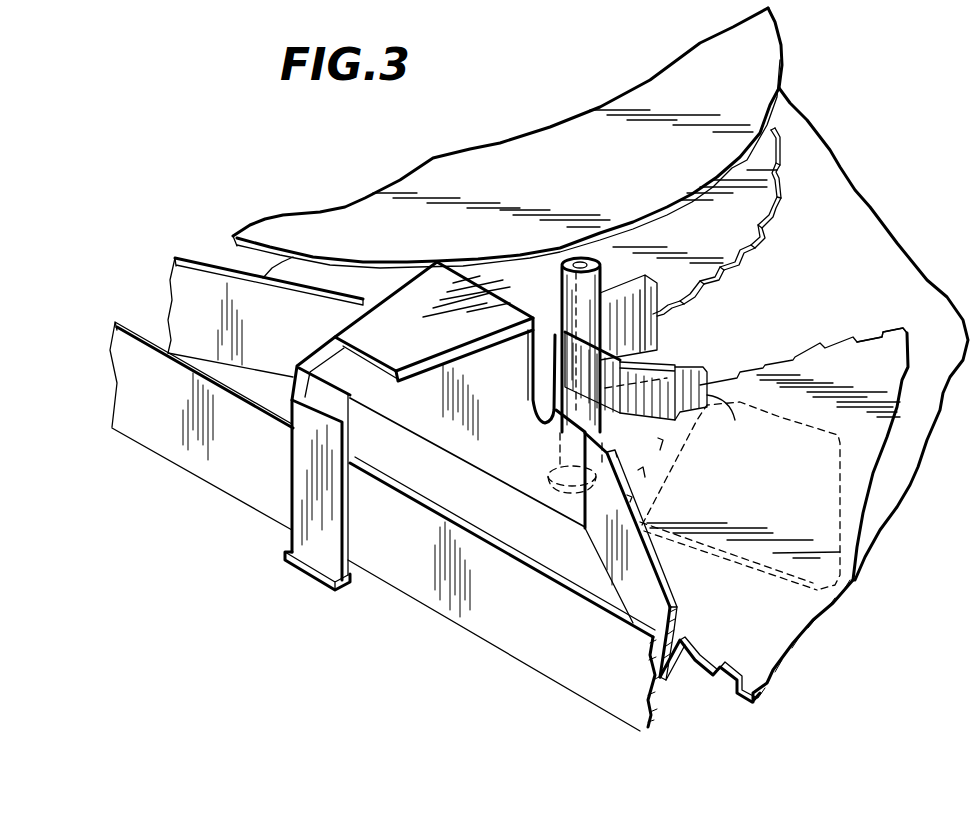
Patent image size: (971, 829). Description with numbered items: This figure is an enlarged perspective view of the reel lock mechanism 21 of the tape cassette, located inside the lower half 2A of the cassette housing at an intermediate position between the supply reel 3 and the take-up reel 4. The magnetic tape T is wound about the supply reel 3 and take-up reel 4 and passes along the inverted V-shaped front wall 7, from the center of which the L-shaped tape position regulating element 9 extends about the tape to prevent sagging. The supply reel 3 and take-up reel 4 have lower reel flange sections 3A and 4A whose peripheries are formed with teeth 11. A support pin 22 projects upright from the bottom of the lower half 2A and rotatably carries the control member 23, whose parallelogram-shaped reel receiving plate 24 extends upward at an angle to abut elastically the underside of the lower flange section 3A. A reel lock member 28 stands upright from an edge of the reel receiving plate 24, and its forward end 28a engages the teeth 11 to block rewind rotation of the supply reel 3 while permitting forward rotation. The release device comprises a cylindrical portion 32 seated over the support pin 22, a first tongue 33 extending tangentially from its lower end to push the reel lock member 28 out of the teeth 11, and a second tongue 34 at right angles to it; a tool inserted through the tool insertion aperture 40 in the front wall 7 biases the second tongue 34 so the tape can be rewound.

The take-up reel 4 is at (648, 105).
The lower reel flange section 4A is at (762, 150).
The teeth 11 is at (777, 140).
The lower half 2A is at (830, 225).
The lower reel flange section 3A is at (875, 362).
The supply reel 3 is at (870, 427).
The reel receiving plate 24 is at (843, 493).
The magnetic tape T is at (423, 585).
The tape position regulating element 9 is at (420, 307).
The front wall 7 is at (592, 537).
The tool insertion aperture 40 is at (547, 410).
The support pin 22 is at (578, 262).
The cylindrical portion 32 is at (607, 285).
The first tongue 33 is at (663, 360).
The second tongue 34 is at (587, 367).
The reel lock member 28 is at (713, 385).
The forward end 28a is at (713, 387).
The reel lock mechanism 21 is at (622, 442).
The control member 23 is at (717, 560).